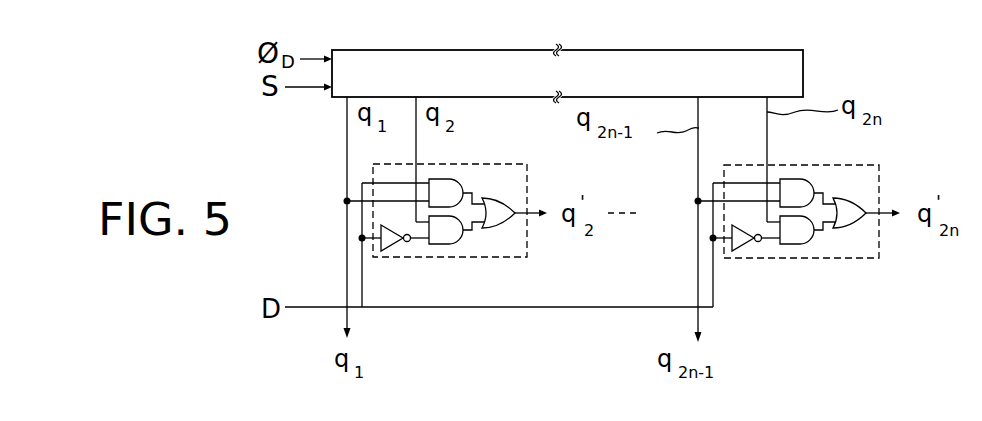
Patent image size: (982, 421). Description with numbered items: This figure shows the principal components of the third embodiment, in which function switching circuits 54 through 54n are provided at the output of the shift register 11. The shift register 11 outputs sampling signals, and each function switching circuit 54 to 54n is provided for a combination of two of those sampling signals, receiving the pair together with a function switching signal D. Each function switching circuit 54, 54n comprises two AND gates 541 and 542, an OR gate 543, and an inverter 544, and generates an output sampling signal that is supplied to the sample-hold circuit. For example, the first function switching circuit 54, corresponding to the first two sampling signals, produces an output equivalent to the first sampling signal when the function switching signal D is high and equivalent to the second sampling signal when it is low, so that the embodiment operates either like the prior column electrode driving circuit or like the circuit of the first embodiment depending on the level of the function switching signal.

The shift register 11 is at (803, 77).
The function switching circuit 54 is at (527, 183).
The function switching circuit 54n is at (880, 187).
The AND gate 541 is at (455, 180).
The AND gate 542 is at (445, 246).
The OR gate 543 is at (500, 228).
The inverter 544 is at (390, 251).